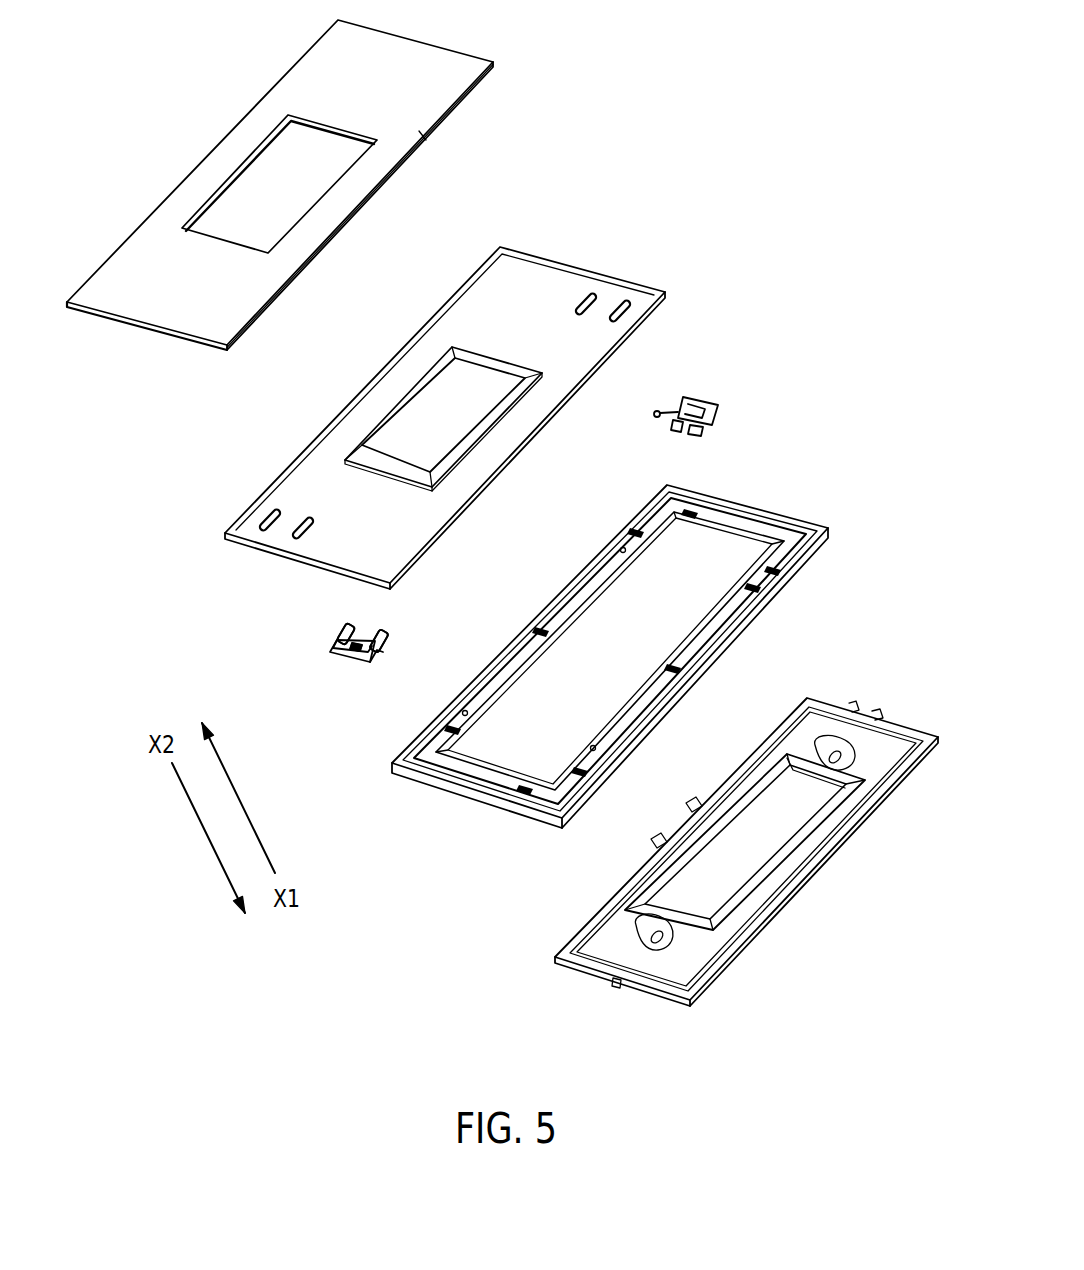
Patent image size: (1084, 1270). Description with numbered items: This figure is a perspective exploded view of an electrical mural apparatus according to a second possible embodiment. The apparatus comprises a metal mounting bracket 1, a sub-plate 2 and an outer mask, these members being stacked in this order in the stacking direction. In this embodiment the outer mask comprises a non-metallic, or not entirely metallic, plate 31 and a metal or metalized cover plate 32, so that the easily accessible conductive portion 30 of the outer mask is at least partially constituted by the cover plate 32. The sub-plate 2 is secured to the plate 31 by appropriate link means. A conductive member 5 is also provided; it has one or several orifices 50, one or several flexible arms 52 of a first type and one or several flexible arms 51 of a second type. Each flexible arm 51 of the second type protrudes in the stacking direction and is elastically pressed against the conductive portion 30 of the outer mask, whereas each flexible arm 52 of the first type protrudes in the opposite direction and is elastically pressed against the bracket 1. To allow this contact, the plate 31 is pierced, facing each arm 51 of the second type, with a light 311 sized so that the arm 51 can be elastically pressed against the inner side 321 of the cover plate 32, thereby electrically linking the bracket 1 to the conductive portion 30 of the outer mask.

The metal mounting bracket 1 is at (852, 697).
The sub-plate 2 is at (773, 510).
The conductive member 5 is at (708, 395).
The orifice 50 is at (350, 660).
The flexible arm of the second type 51 is at (348, 625).
The flexible arm of the first type 52 is at (378, 653).
The conductive portion 30 is at (333, 50).
The plate 31 is at (532, 247).
The light 311 is at (597, 297).
The metal cover plate 32 is at (493, 62).
The inner side 321 is at (408, 118).